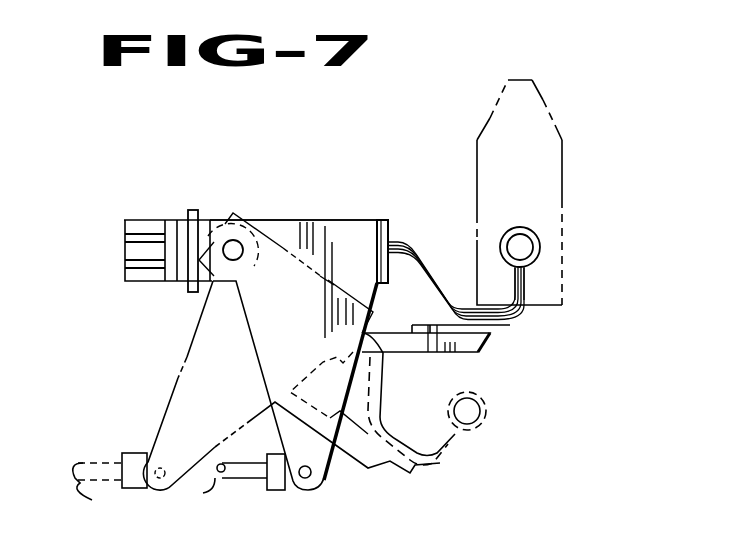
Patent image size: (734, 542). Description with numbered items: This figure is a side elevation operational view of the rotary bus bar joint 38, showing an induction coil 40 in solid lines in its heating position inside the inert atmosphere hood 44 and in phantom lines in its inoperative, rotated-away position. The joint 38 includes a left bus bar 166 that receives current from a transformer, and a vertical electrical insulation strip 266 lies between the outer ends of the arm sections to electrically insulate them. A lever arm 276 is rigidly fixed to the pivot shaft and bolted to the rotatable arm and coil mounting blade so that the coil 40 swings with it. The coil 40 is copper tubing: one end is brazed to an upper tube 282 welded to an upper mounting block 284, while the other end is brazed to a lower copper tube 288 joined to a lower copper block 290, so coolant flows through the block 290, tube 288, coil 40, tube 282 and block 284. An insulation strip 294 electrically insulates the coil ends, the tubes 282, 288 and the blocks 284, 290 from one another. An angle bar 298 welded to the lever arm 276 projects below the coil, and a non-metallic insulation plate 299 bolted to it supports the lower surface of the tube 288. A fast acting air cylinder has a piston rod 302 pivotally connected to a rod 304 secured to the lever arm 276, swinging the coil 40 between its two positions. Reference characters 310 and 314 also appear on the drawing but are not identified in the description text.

The rotary bus bar joint 38 is at (283, 167).
The induction coil 40 is at (540, 238).
The inert atmosphere hood 44 is at (543, 101).
The left bus bar 166 is at (129, 221).
The vertical electrical insulation strip 266 is at (239, 242).
The lever arm 276 is at (246, 322).
The upper tube 282 is at (510, 294).
The upper mounting block 284 is at (386, 222).
The lower copper tube 288 is at (510, 323).
The lower copper block 290 is at (375, 276).
The insulation strip 294 is at (430, 265).
The angle bar 298 is at (482, 350).
The non-metallic insulation plate 299 is at (520, 333).
The piston rod 302 is at (92, 500).
The rod 304 is at (305, 480).
The member 310 is at (428, 536).
The member 314 is at (511, 537).